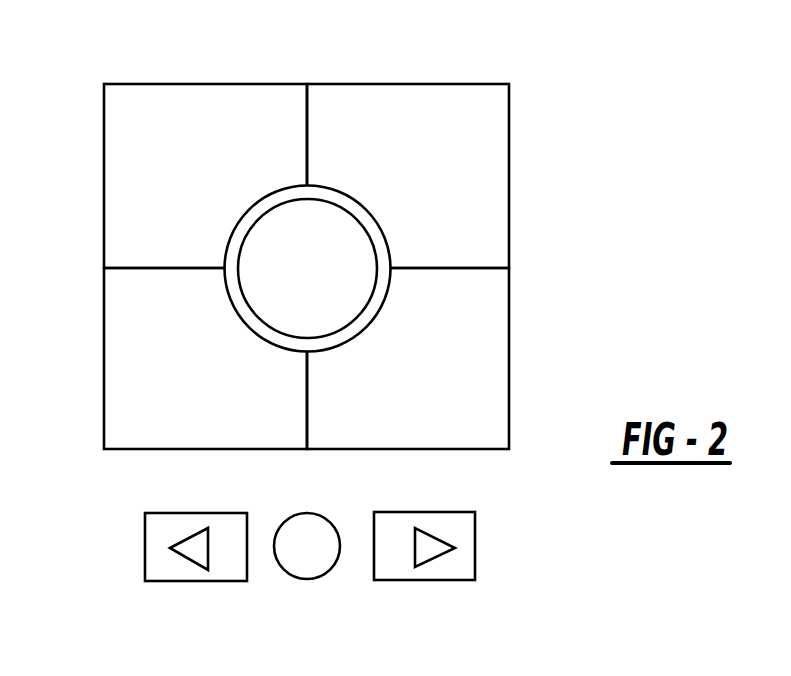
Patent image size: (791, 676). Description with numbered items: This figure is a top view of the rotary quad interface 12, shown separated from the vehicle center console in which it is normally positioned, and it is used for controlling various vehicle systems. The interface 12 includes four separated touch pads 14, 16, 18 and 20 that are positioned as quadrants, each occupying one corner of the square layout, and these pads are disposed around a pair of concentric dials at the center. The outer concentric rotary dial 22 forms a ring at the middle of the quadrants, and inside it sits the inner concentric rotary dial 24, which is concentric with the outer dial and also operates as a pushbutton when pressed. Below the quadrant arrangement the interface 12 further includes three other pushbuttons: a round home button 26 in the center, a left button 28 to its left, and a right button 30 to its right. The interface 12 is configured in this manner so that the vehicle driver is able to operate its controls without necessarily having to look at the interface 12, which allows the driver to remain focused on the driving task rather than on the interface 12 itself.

The rotary quad interface 12 is at (645, 62).
The touch pad 14 is at (138, 222).
The touch pad 16 is at (488, 140).
The touch pad 18 is at (150, 367).
The touch pad 20 is at (433, 352).
The outer concentric rotary dial 22 is at (270, 342).
The inner concentric rotary dial 24 is at (347, 322).
The home button 26 is at (322, 577).
The left button 28 is at (177, 582).
The right button 30 is at (407, 580).